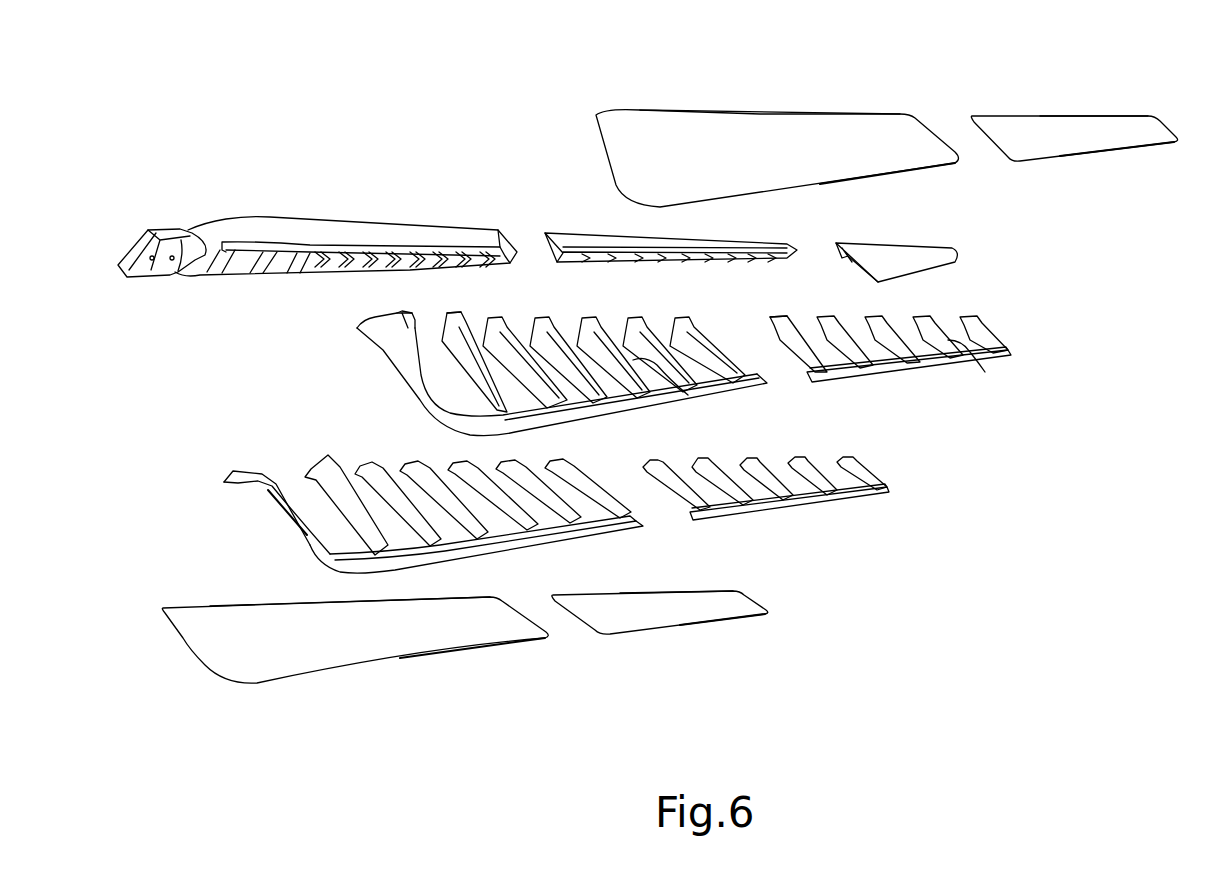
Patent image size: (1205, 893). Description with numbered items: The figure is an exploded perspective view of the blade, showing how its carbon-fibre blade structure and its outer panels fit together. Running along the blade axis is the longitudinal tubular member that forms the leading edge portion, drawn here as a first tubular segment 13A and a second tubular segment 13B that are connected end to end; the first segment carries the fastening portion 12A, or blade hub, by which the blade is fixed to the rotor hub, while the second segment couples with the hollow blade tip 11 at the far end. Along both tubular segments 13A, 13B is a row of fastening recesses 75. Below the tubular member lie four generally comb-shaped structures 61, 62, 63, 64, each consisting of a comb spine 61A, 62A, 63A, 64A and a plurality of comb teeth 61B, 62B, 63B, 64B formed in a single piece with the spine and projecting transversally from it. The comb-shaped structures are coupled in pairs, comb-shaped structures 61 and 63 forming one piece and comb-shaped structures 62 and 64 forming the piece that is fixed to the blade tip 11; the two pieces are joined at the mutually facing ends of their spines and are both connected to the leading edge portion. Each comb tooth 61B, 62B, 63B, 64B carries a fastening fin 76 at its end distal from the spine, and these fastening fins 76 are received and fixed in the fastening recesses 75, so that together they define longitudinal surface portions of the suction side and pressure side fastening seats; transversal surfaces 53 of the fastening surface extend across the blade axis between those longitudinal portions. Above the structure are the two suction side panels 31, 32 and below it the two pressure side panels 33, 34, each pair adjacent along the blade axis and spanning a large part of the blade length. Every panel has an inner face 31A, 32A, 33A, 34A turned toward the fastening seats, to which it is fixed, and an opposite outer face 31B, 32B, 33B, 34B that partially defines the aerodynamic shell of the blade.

The blade tip 11 is at (923, 263).
The fastening portion 12A is at (150, 226).
The first tubular segment 13A is at (413, 228).
The second tubular segment 13B is at (553, 230).
The suction side panel 31 is at (698, 155).
The inner face 31A is at (853, 181).
The outer face 31B is at (803, 132).
The suction side panel 32 is at (1053, 127).
The inner face 32A is at (1087, 157).
The outer face 32B is at (1113, 120).
The pressure side panel 33 is at (331, 639).
The inner face 33A is at (440, 637).
The outer face 33B is at (390, 658).
The pressure side panel 34 is at (661, 616).
The inner face 34A is at (700, 603).
The outer face 34B is at (727, 617).
The transversal surface 53 is at (633, 360).
The comb-shaped structure 61 is at (483, 364).
The comb spine 61A is at (573, 414).
The comb teeth 61B is at (650, 323).
The comb-shaped structure 62 is at (959, 360).
The comb spine 62A is at (968, 352).
The comb teeth 62B is at (889, 292).
The comb-shaped structure 63 is at (360, 495).
The comb spine 63A is at (470, 547).
The comb teeth 63B is at (265, 514).
The comb-shaped structure 64 is at (848, 507).
The comb spine 64A is at (773, 512).
The comb teeth 64B is at (808, 461).
The fastening recesses 75 is at (271, 241).
The fastening fins 76 is at (372, 320).